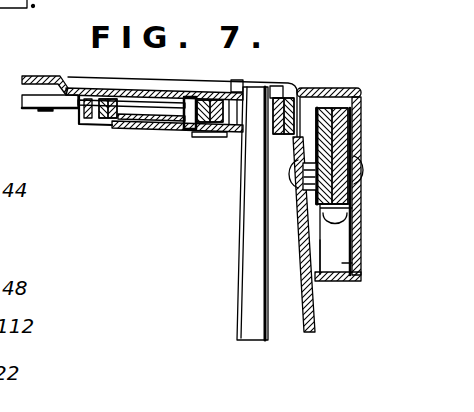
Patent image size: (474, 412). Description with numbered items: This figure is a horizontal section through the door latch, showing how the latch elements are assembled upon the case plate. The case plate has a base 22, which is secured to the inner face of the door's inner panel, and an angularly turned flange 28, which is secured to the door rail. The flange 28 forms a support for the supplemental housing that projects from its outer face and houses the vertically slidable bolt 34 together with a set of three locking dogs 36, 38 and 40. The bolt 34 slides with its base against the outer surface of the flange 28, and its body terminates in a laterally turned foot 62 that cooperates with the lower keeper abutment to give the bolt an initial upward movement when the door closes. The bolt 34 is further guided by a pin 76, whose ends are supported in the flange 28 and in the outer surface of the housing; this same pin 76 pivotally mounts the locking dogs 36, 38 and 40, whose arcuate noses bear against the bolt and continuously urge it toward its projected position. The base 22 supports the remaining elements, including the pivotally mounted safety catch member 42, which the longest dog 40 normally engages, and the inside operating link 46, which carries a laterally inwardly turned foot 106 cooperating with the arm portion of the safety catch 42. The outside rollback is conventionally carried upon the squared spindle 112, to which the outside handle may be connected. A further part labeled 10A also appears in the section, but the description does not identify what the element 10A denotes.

The housing 10A is at (199, 97).
The base 22 is at (46, 77).
The laterally inwardly turned foot 106 is at (129, 99).
The safety catch member 42 is at (40, 114).
The inside operating link 46 is at (143, 130).
The squared spindle 112 is at (247, 243).
The angularly turned flange 28 is at (310, 333).
The pin 76 is at (362, 173).
The locking dog 36 is at (349, 203).
The locking dog 38 is at (352, 209).
The locking dog 40 is at (330, 232).
The bolt 34 is at (334, 257).
The laterally turned foot 62 is at (342, 263).